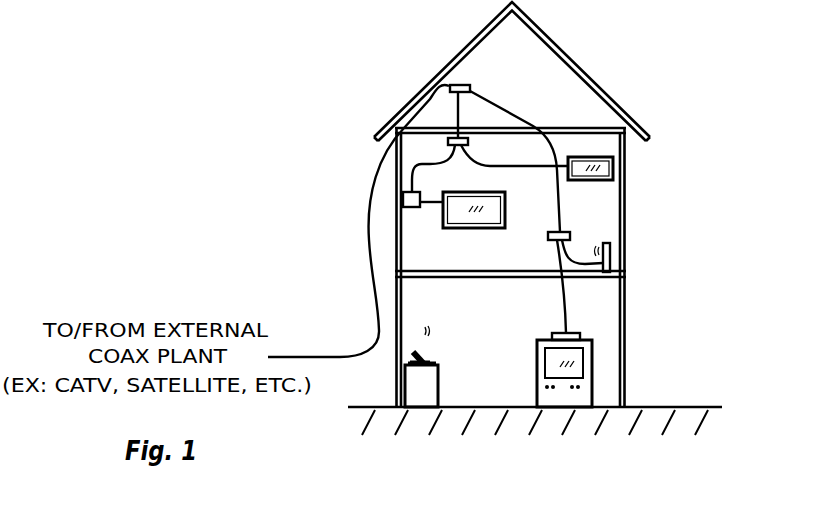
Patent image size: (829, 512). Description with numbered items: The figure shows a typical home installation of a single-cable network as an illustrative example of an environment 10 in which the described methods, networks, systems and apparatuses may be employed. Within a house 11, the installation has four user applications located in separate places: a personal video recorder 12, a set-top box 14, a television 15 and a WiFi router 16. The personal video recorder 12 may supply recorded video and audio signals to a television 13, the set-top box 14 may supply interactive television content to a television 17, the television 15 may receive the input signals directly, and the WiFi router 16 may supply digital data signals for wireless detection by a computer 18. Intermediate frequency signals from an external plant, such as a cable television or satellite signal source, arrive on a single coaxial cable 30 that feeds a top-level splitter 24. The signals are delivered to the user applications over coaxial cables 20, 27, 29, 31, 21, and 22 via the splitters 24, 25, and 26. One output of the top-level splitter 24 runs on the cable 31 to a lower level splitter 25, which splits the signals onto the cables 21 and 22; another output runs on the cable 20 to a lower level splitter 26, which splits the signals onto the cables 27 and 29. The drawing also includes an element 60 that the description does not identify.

The environment 10 is at (660, 58).
The house 11 is at (622, 112).
The personal video recorder (PVR) 12 is at (415, 191).
The television 13 is at (493, 192).
The set-top box (STB) 14 is at (555, 334).
The television 15 is at (575, 157).
The WiFi router 16 is at (606, 243).
The television 17 is at (537, 378).
The computer 18 is at (412, 350).
The coaxial cable 20 is at (452, 116).
The coaxial cable 21 is at (554, 252).
The coaxial cable 22 is at (573, 247).
The top-level splitter 24 is at (471, 87).
The lower level splitter 25 is at (550, 232).
The lower level splitter 26 is at (448, 142).
The coaxial cable 27 is at (451, 160).
The coaxial cable 29 is at (487, 166).
The coaxial cable 30 is at (367, 222).
The coaxial cable 31 is at (513, 114).
The connection cable 60 is at (434, 204).